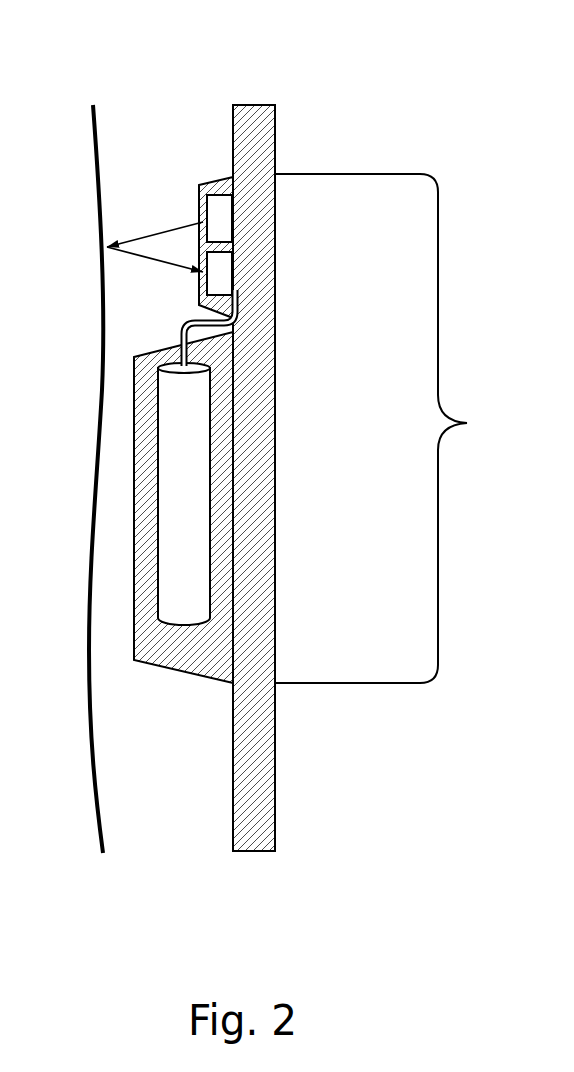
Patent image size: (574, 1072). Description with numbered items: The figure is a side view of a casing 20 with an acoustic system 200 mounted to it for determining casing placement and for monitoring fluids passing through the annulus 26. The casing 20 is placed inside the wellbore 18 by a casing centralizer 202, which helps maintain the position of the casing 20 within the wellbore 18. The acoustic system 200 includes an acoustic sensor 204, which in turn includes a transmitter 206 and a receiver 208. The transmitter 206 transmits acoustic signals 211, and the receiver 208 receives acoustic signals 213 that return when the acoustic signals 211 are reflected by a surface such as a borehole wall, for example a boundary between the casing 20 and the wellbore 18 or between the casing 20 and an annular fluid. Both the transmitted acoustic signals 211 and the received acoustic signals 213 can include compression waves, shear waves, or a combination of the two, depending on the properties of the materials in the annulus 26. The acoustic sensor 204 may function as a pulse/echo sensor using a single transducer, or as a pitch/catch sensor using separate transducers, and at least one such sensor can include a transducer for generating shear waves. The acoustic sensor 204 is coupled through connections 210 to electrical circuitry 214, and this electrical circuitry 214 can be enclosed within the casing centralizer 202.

The wellbore 18 is at (93, 153).
The casing 20 is at (250, 105).
The annulus 26 is at (172, 830).
The acoustic system 200 is at (467, 423).
The casing centralizer 202 is at (182, 672).
The acoustic sensor 204 is at (198, 203).
The transmitter 206 is at (225, 222).
The receiver 208 is at (226, 276).
The connections 210 is at (188, 340).
The acoustic signals 211 is at (162, 232).
The acoustic signals 213 is at (162, 262).
The electrical circuitry 214 is at (198, 525).